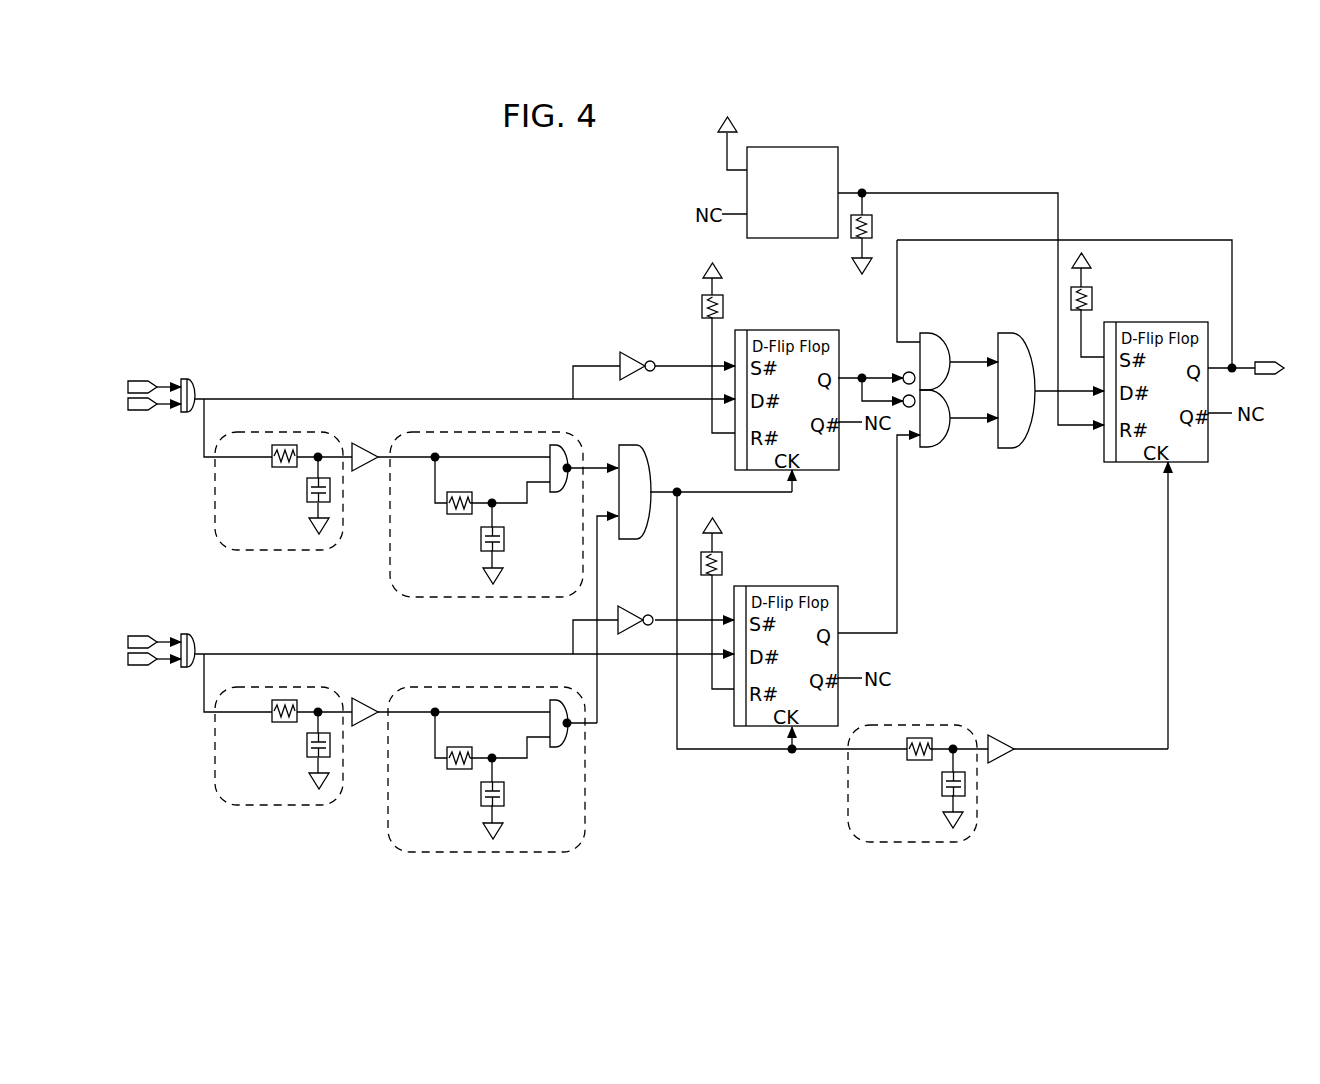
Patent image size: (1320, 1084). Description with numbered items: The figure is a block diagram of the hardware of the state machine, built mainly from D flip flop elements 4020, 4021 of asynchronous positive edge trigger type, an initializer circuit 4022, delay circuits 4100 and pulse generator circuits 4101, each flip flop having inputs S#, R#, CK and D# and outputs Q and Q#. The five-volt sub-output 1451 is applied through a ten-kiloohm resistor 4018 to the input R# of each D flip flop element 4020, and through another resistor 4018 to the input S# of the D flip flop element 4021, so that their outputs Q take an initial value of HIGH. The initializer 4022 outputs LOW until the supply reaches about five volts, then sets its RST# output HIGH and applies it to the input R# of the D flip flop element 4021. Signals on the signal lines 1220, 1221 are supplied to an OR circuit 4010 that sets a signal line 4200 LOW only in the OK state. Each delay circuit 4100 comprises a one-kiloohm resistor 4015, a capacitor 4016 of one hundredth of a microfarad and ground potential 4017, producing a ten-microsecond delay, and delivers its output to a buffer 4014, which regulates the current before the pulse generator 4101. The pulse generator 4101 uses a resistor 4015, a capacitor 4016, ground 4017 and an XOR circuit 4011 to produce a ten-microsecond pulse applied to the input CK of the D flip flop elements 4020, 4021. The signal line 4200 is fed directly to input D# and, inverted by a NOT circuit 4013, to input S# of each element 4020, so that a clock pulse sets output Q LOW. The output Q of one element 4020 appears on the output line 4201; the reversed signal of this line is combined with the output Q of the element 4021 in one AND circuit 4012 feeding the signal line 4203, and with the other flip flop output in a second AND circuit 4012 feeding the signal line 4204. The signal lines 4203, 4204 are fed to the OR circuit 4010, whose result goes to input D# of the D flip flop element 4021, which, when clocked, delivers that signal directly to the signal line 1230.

The signal line 1220 is at (146, 381).
The signal line 1221 is at (148, 412).
The signal line 1230 is at (1268, 362).
The 5V sub-output 1451 is at (703, 271).
The OR circuit 4010 is at (193, 379).
The XOR circuit 4011 is at (558, 492).
The AND circuit 4012 is at (927, 333).
The NOT circuit 4013 is at (620, 352).
The buffer 4014 is at (364, 443).
The resistor 4015 is at (282, 445).
The capacitor 4016 is at (308, 492).
The ground potential 4017 is at (309, 527).
The resistor 4018 is at (696, 307).
The D flip flop element 4020 is at (788, 330).
The D flip flop element 4021 is at (1134, 462).
The initializer circuit 4022 is at (840, 165).
The delay circuit 4100 is at (214, 517).
The pulse generator circuit 4101 is at (388, 572).
The signal line 4200 is at (420, 399).
The output line 4201 is at (856, 376).
The signal line 4203 is at (966, 362).
The signal line 4204 is at (968, 418).